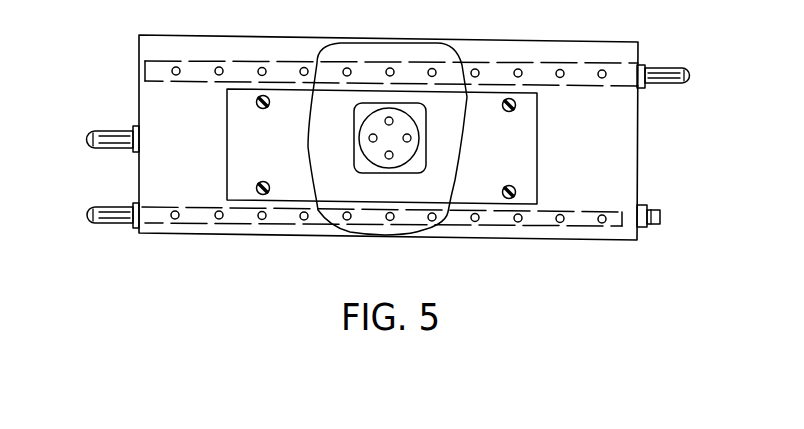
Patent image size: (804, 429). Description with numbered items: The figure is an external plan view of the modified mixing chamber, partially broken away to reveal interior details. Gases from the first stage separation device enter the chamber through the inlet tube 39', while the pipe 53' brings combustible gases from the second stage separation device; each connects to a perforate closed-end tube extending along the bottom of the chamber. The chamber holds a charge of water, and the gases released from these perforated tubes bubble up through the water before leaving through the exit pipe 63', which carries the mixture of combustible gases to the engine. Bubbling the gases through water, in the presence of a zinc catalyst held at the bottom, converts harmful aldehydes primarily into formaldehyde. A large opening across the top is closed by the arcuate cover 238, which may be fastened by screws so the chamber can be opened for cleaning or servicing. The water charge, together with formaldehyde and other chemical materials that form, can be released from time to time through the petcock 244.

The inlet tube 39' is at (689, 47).
The pipe 53' is at (100, 195).
The exit pipe 63' is at (105, 115).
The arcuate cover 238 is at (512, 170).
The petcock 244 is at (722, 183).